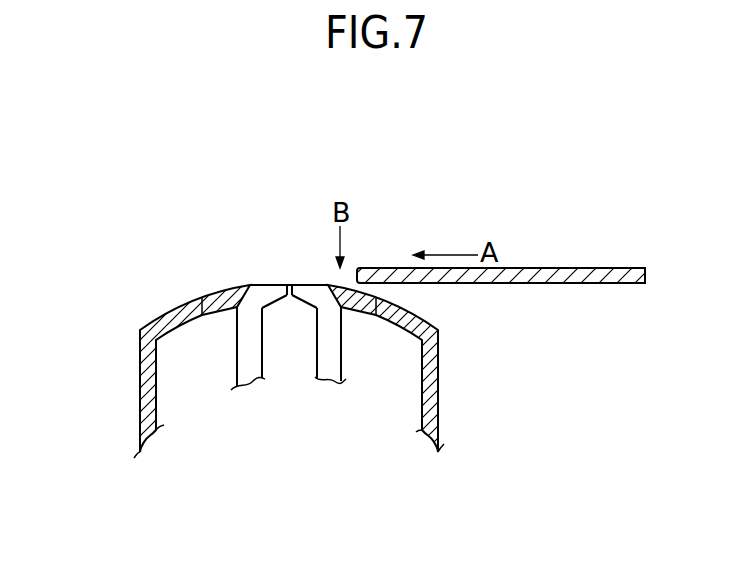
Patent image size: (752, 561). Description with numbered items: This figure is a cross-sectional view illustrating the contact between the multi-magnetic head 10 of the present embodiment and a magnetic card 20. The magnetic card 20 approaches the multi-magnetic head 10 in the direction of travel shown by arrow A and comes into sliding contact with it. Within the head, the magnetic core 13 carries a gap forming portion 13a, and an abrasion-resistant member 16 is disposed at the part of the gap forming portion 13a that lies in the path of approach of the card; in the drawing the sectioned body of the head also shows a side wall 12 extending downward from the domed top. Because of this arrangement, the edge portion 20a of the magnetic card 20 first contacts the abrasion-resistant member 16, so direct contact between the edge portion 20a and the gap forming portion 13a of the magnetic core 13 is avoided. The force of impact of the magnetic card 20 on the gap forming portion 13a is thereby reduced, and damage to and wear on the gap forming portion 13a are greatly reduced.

The multi-magnetic head 10 is at (192, 292).
The side wall 12 is at (410, 377).
The magnetic core 13 is at (318, 343).
The gap forming portion 13a is at (263, 285).
The abrasion-resistant member 16 is at (371, 302).
The magnetic card 20 is at (647, 268).
The edge portion 20a is at (358, 272).